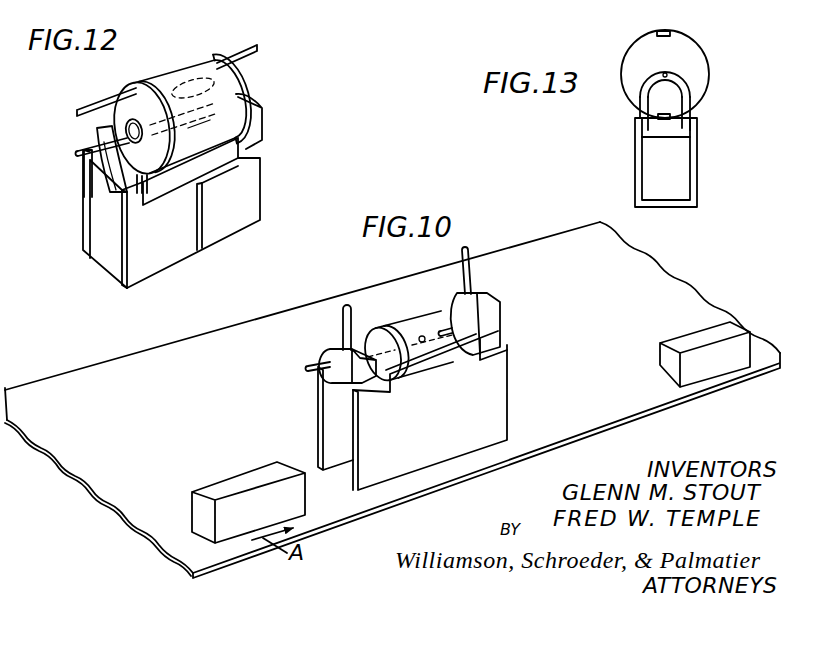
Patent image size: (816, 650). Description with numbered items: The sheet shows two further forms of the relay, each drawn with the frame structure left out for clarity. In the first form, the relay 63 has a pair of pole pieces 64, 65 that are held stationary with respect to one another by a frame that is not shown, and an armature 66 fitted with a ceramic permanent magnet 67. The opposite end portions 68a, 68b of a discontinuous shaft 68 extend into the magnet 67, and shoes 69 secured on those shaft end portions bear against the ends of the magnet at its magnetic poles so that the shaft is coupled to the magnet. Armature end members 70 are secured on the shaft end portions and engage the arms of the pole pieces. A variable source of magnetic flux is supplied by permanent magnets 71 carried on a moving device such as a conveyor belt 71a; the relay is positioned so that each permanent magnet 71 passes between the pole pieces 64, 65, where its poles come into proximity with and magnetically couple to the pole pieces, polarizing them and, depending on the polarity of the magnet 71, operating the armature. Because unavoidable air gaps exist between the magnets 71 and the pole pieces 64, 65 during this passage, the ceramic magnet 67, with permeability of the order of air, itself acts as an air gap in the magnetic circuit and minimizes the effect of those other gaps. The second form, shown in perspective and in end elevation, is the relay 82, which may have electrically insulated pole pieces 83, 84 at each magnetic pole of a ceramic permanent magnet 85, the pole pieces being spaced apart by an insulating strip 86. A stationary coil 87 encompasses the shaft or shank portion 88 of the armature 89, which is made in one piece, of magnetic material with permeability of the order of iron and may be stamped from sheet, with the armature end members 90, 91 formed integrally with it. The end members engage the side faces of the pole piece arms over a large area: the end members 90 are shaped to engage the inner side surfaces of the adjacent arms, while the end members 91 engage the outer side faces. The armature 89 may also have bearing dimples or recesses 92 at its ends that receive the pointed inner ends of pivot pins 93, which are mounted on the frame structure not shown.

In FIG. 10, the relay 63 is at (513, 375).
In FIG. 10, the pole piece 64 is at (497, 427).
In FIG. 10, the pole piece 65 is at (333, 392).
In FIG. 10, the armature 66 is at (505, 315).
In FIG. 10, the ceramic permanent magnet 67 is at (410, 348).
In FIG. 10, the discontinuous shaft 68 is at (327, 357).
In FIG. 10, the shaft end portion 68a is at (453, 322).
In FIG. 10, the shaft end portion 68b is at (372, 335).
In FIG. 10, the shoe 69 is at (433, 317).
In FIG. 10, the armature end member 70 is at (492, 300).
In FIG. 10, the permanent magnet 71 is at (212, 487).
In FIG. 10, the conveyor belt 71a is at (171, 409).
In FIG. 12, the relay 82 is at (268, 165).
In FIG. 13, the relay 82 is at (699, 160).
In FIG. 12, the pole piece 83 is at (240, 218).
In FIG. 12, the pole piece 84 is at (157, 253).
In FIG. 12, the ceramic permanent magnet 85 is at (97, 235).
In FIG. 13, the ceramic permanent magnet 85 is at (658, 177).
In FIG. 12, the insulating strip 86 is at (200, 243).
In FIG. 12, the stationary coil 87 is at (174, 74).
In FIG. 13, the stationary coil 87 is at (683, 50).
In FIG. 12, the shaft or shank portion 88 is at (130, 129).
In FIG. 12, the armature 89 is at (254, 88).
In FIG. 13, the armature 89 is at (690, 74).
In FIG. 12, the armature end member 90 is at (100, 172).
In FIG. 13, the armature end member 90 is at (640, 104).
In FIG. 12, the armature end member 91 is at (258, 117).
In FIG. 13, the armature end member 91 is at (697, 108).
In FIG. 12, the bearing dimple or recess 92 is at (134, 147).
In FIG. 12, the pivot pin 93 is at (76, 153).